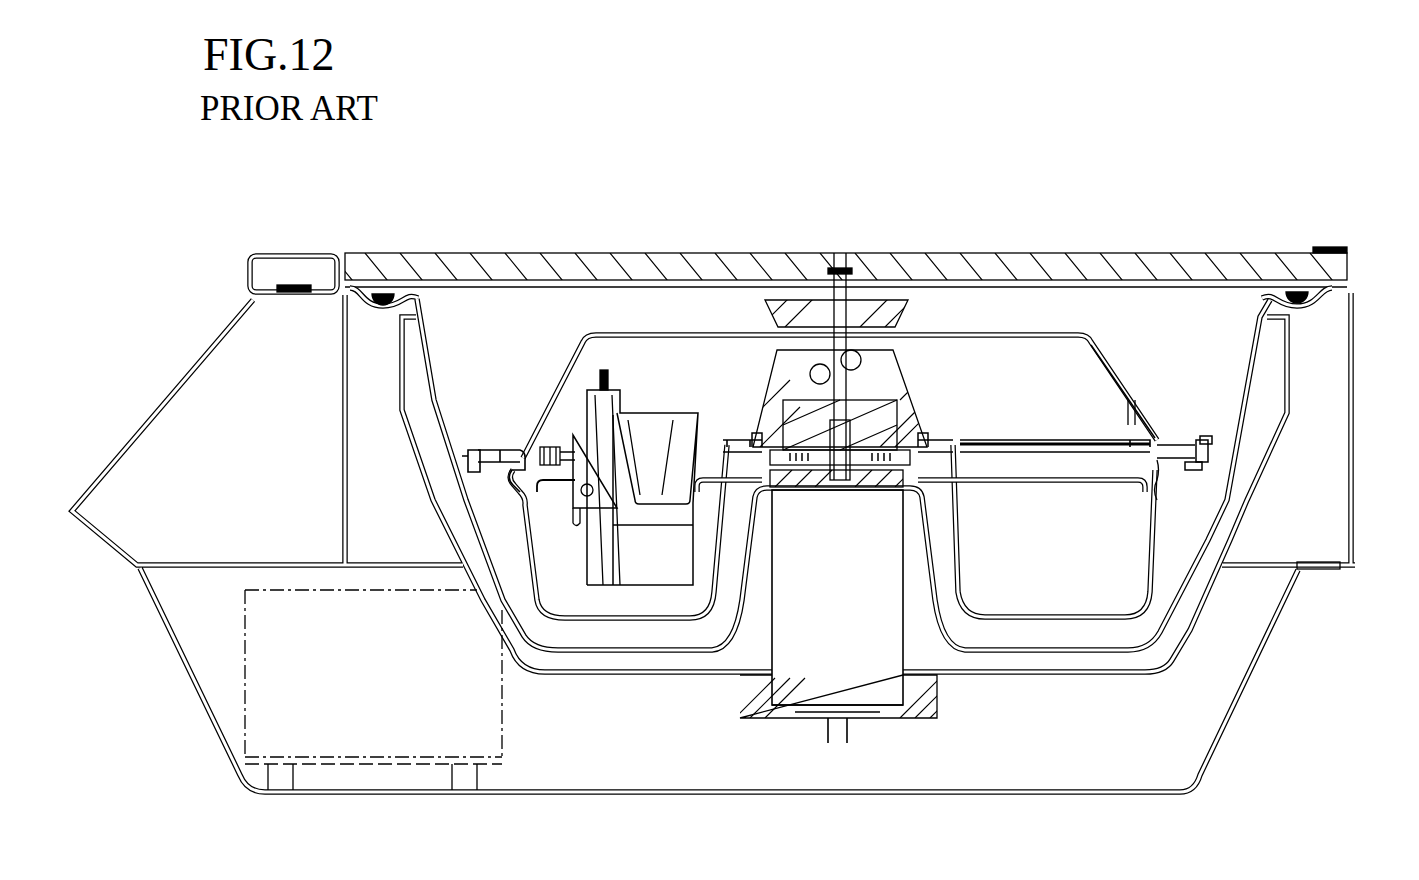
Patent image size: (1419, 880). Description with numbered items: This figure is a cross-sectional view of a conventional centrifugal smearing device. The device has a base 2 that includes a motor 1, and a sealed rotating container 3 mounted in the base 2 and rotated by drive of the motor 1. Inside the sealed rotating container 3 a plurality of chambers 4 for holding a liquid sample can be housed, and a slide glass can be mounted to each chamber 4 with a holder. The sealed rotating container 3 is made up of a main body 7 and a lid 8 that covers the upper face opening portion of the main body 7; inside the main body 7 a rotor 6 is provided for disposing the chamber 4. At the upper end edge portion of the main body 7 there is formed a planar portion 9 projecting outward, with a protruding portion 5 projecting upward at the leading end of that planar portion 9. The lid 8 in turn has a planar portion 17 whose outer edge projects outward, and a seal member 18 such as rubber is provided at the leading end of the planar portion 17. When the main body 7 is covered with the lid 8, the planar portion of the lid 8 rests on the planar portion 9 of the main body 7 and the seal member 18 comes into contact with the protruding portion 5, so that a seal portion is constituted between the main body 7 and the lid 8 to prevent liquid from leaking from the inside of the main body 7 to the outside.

The motor 1 is at (788, 603).
The base 2 is at (1272, 630).
The sealed rotating container 3 is at (1040, 322).
The chamber 4 is at (647, 417).
The protruding portion 5 is at (1210, 453).
The rotor 6 is at (1020, 480).
The main body 7 is at (1213, 527).
The lid 8 is at (1127, 368).
The planar portion 9 is at (1195, 468).
The planar portion 17 is at (500, 455).
The seal member 18 is at (473, 450).